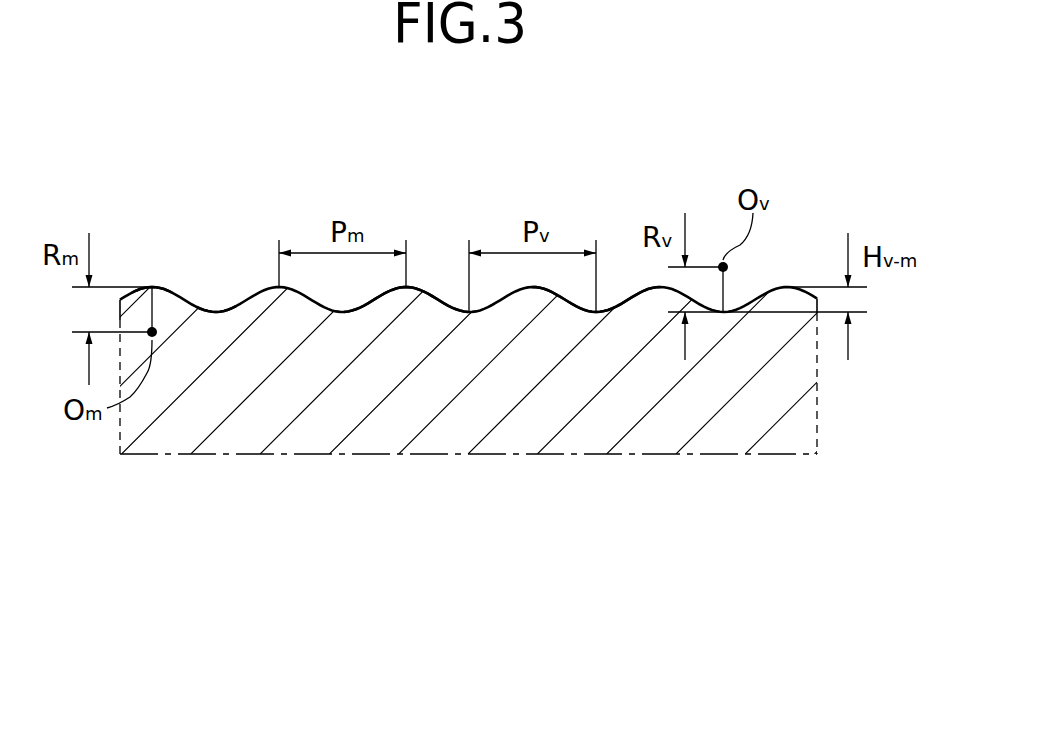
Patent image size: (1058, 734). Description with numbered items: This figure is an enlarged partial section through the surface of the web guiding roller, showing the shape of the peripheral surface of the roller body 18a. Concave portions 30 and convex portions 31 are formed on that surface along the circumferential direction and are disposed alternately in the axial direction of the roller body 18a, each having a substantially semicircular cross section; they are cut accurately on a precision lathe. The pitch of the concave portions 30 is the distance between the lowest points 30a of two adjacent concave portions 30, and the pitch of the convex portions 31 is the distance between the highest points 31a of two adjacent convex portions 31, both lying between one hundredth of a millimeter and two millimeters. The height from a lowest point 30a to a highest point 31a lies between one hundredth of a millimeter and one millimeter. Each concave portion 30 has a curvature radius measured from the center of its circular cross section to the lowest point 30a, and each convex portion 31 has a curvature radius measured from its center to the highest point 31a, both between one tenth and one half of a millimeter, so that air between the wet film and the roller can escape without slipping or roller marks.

The roller body 18a is at (480, 430).
The concave portion 30 is at (612, 310).
The lowest point 30a is at (213, 310).
The convex portion 31 is at (418, 287).
The highest point 31a is at (152, 287).